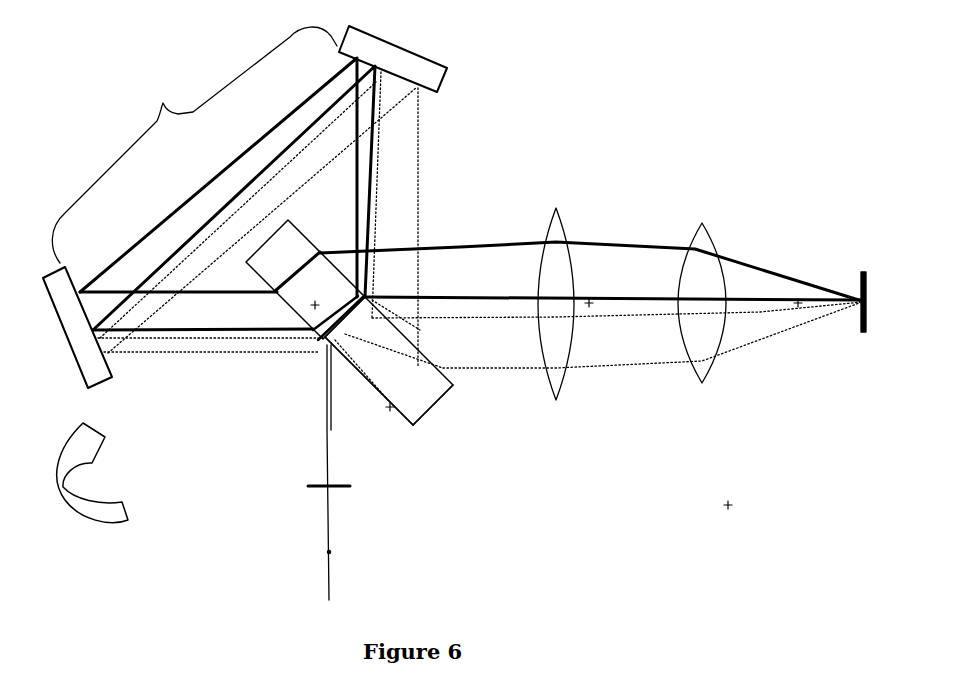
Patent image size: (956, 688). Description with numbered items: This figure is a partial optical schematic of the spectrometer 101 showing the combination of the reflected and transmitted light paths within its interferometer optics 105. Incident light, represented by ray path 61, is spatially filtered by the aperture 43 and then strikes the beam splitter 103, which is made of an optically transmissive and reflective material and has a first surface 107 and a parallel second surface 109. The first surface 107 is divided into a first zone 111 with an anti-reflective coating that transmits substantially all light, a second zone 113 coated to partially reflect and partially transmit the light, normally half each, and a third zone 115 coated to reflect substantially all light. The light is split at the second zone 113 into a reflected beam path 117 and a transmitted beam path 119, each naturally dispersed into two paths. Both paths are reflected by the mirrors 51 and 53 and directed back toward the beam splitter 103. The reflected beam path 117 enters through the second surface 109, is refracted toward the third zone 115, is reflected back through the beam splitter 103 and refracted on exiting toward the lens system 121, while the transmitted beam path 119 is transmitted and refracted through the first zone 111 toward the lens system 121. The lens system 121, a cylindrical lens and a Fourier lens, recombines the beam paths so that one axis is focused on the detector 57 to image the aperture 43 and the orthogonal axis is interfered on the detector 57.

The aperture 43 is at (326, 480).
The mirror 51 is at (77, 327).
The mirror 53 is at (393, 59).
The detector 57 is at (864, 270).
The ray path 61 is at (323, 551).
The spectrometer 101 is at (113, 473).
The beam splitter 103 is at (414, 394).
The interferometer optics 105 is at (194, 145).
The first surface 107 is at (407, 431).
The second surface 109 is at (299, 219).
The first zone 111 is at (283, 309).
The second zone 113 is at (326, 348).
The third zone 115 is at (350, 376).
The reflected beam path 117 is at (150, 342).
The transmitted beam path 119 is at (357, 115).
The lens system 121 is at (705, 220).